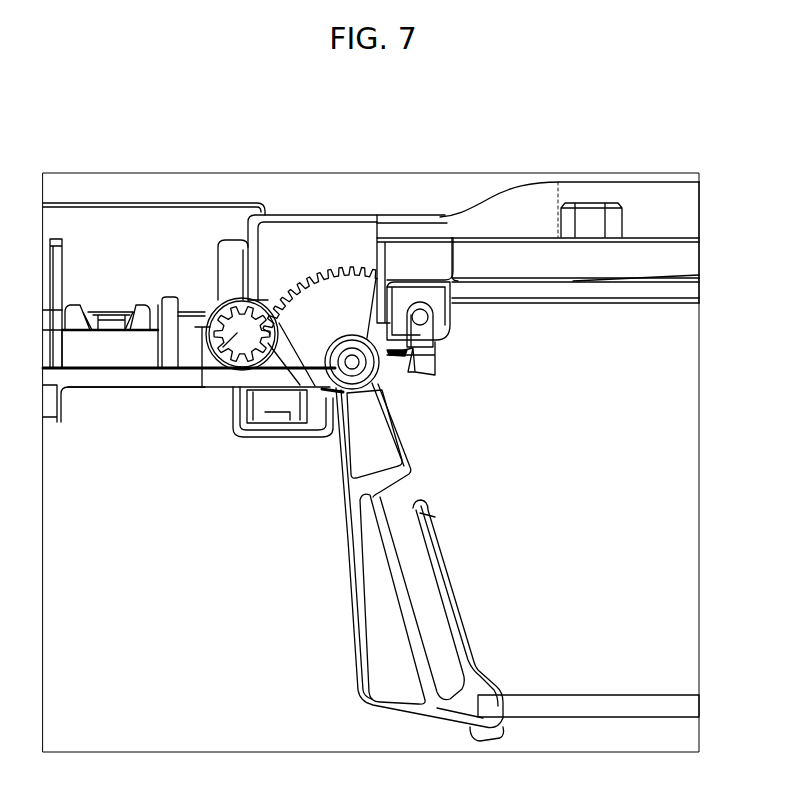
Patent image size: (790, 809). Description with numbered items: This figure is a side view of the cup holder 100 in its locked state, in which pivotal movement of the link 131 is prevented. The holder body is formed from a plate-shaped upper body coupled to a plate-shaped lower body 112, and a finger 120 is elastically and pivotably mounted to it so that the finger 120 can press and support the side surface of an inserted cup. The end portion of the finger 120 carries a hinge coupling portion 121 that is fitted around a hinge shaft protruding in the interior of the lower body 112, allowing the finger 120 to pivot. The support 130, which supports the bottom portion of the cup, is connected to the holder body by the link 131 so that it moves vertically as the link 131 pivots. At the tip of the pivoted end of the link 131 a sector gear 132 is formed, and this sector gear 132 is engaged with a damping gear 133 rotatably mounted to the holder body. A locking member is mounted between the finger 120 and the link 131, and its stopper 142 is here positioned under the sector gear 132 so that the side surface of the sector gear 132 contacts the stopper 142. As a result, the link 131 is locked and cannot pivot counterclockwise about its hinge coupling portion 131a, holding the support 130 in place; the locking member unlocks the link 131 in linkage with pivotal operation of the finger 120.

The lower body 112 is at (130, 217).
The hinge coupling portion 121 is at (270, 250).
The sector gear 132 is at (328, 296).
The finger 120 is at (652, 215).
The hinge coupling portion 131a is at (435, 375).
The link 131 is at (400, 453).
The damping gear 133 is at (210, 360).
The stopper 142 is at (270, 397).
The cup holder 100 is at (280, 458).
The support 130 is at (600, 695).